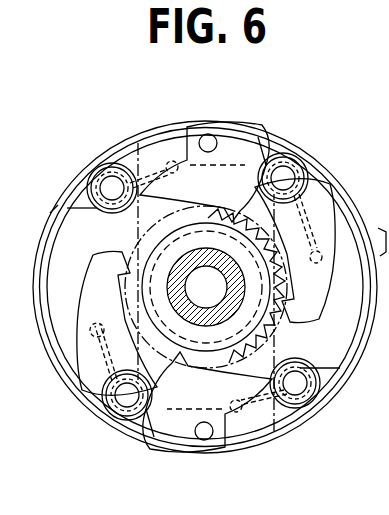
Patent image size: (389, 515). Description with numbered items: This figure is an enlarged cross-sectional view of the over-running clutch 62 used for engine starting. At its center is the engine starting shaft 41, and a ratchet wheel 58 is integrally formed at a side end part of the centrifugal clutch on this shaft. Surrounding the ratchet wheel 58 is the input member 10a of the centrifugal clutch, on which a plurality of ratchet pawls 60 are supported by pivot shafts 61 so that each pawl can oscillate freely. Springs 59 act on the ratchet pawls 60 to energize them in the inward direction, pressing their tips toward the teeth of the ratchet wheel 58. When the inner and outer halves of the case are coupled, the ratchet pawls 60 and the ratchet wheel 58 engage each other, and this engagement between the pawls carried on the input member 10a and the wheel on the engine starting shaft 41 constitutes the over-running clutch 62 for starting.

The input member 10a is at (182, 129).
The engine starting shaft 41 is at (198, 263).
The ratchet wheel 58 is at (268, 285).
The spring 59 is at (82, 210).
The ratchet pawl 60 is at (154, 160).
The pivot shaft 61 is at (110, 187).
The over-running clutch 62 is at (317, 360).